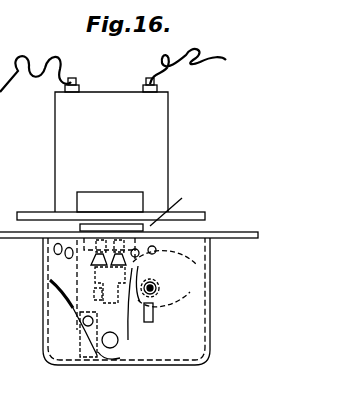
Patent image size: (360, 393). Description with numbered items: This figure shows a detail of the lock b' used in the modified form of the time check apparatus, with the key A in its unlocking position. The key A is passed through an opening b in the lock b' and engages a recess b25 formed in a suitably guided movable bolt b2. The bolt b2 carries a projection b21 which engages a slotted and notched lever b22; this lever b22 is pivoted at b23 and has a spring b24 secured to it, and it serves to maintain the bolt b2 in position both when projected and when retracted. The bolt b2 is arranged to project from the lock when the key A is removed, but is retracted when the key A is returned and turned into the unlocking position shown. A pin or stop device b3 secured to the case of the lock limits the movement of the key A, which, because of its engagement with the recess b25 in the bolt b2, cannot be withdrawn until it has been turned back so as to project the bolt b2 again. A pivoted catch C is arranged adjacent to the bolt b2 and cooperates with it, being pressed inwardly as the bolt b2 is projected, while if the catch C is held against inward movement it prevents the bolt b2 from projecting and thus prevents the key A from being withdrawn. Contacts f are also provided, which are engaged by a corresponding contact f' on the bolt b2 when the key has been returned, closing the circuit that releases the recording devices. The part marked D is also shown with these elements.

The battery box D is at (111, 152).
The pivoted catch C is at (128, 192).
The lock b' is at (138, 301).
The contact f' is at (105, 221).
The contacts f is at (51, 225).
The slotted and notched lever b22 is at (100, 290).
The projection b21 is at (100, 298).
The spring b24 is at (82, 303).
The pivot b23 is at (71, 360).
The recess b25 is at (154, 284).
The opening b is at (164, 313).
The pin or stop device b3 is at (145, 323).
The key A is at (160, 302).
The bolt b2 is at (134, 368).